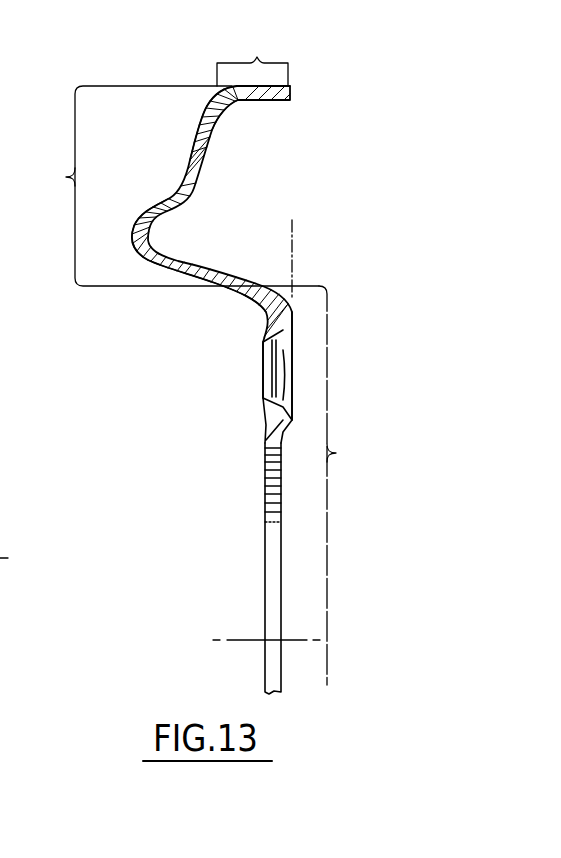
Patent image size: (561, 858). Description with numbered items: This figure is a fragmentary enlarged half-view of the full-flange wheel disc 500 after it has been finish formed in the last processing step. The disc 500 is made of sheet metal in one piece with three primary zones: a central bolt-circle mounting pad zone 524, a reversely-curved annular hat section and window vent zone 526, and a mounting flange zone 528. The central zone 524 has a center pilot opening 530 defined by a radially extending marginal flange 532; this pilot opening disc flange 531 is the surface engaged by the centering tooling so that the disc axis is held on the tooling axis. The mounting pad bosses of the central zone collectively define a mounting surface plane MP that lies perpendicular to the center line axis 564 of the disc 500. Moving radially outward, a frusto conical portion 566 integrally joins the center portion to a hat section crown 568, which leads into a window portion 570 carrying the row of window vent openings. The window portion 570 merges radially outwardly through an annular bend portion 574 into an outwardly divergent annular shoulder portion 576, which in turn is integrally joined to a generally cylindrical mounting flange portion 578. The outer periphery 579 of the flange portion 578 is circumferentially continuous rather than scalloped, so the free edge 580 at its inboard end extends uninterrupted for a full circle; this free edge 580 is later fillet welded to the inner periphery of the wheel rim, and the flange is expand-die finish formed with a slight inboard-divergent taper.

The wheel disc 500 is at (158, 184).
The central bolt-circle mounting pad zone 524 is at (356, 485).
The reversely-curved annular hat section and window vent zone 526 is at (162, 186).
The mounting flange zone 528 is at (252, 54).
The center pilot opening 530 is at (277, 529).
The disc pilot opening disc flange 531 is at (267, 461).
The radially extending marginal flange 532 is at (268, 401).
The center line axis 564 is at (240, 640).
The frusto conical portion 566 is at (192, 262).
The hat section crown 568 is at (133, 221).
The window portion 570 is at (202, 163).
The annular bend portion 574 is at (219, 103).
The outwardly divergent annular shoulder portion 576 is at (238, 100).
The mounting flange portion 578 is at (282, 89).
The outer periphery 579 is at (265, 82).
The free edge 580 is at (293, 96).
The mounting surface plane MP is at (292, 252).